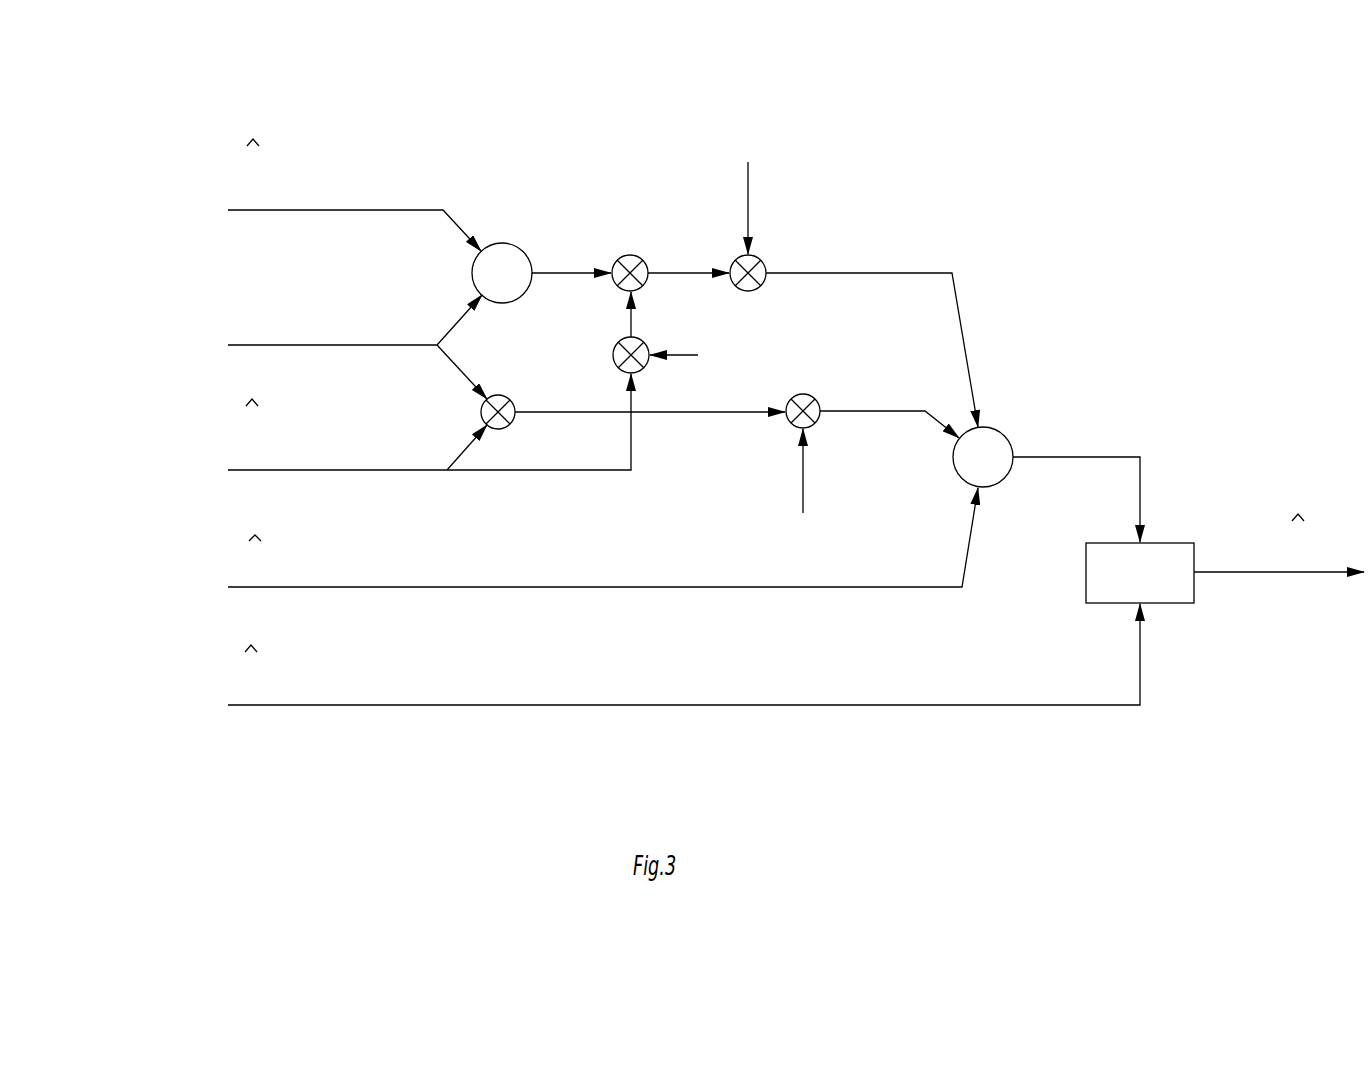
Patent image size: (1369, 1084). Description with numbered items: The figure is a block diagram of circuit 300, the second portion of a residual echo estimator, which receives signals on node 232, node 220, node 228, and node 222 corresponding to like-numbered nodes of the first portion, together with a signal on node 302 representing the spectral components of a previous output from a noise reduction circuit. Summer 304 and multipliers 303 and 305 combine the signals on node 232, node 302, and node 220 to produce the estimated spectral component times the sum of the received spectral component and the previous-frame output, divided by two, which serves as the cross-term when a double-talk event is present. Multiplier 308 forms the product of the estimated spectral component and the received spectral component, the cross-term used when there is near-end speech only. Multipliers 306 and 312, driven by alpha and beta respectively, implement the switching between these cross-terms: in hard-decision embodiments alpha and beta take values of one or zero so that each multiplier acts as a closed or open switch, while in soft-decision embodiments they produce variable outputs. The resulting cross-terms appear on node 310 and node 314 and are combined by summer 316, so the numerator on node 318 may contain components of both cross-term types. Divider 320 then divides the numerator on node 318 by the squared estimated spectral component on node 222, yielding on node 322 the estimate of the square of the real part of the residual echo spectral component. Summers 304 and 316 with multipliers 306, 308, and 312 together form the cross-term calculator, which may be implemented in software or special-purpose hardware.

The circuit 300 is at (1225, 215).
The node 302 is at (240, 211).
The node 232 is at (227, 358).
The node 220 is at (227, 483).
The node 228 is at (227, 600).
The node 222 is at (227, 718).
The multiplier 303 is at (622, 324).
The summer 304 is at (539, 310).
The multiplier 305 is at (655, 244).
The multiplier 306 is at (775, 302).
The multiplier 308 is at (526, 439).
The node 310 is at (935, 262).
The multiplier 312 is at (832, 439).
The node 314 is at (898, 400).
The summer 316 is at (1015, 494).
The node 318 is at (1125, 446).
The divider 320 is at (1183, 532).
The node 322 is at (1259, 594).